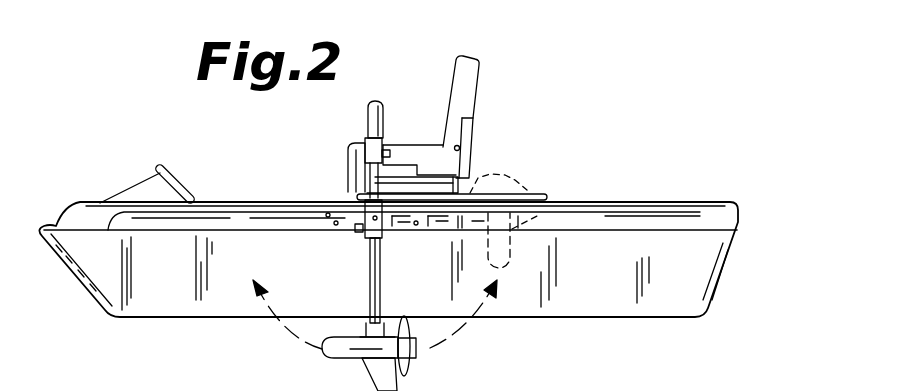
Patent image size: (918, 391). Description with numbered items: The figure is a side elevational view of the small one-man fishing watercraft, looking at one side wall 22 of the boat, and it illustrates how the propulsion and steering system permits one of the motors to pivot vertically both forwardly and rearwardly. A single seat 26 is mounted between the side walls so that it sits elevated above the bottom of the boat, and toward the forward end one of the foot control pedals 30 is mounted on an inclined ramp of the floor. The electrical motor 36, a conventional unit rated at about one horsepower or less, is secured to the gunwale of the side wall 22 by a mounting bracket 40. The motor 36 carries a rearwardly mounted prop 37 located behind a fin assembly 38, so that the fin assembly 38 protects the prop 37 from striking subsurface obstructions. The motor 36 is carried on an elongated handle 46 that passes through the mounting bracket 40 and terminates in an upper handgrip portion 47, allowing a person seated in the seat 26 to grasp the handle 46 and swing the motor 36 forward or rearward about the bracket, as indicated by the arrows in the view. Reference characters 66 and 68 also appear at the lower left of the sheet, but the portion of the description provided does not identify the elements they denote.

The side wall 22 is at (716, 305).
The seat 26 is at (469, 84).
The foot control pedal 30 is at (238, 171).
The electrical motor 36 is at (357, 325).
The prop 37 is at (413, 373).
The fin assembly 38 is at (372, 366).
The mounting bracket 40 is at (346, 242).
The elongated handle 46 is at (380, 262).
The handgrip portion 47 is at (368, 122).
The deck fitting 66 is at (78, 382).
The deck fitting 68 is at (121, 382).